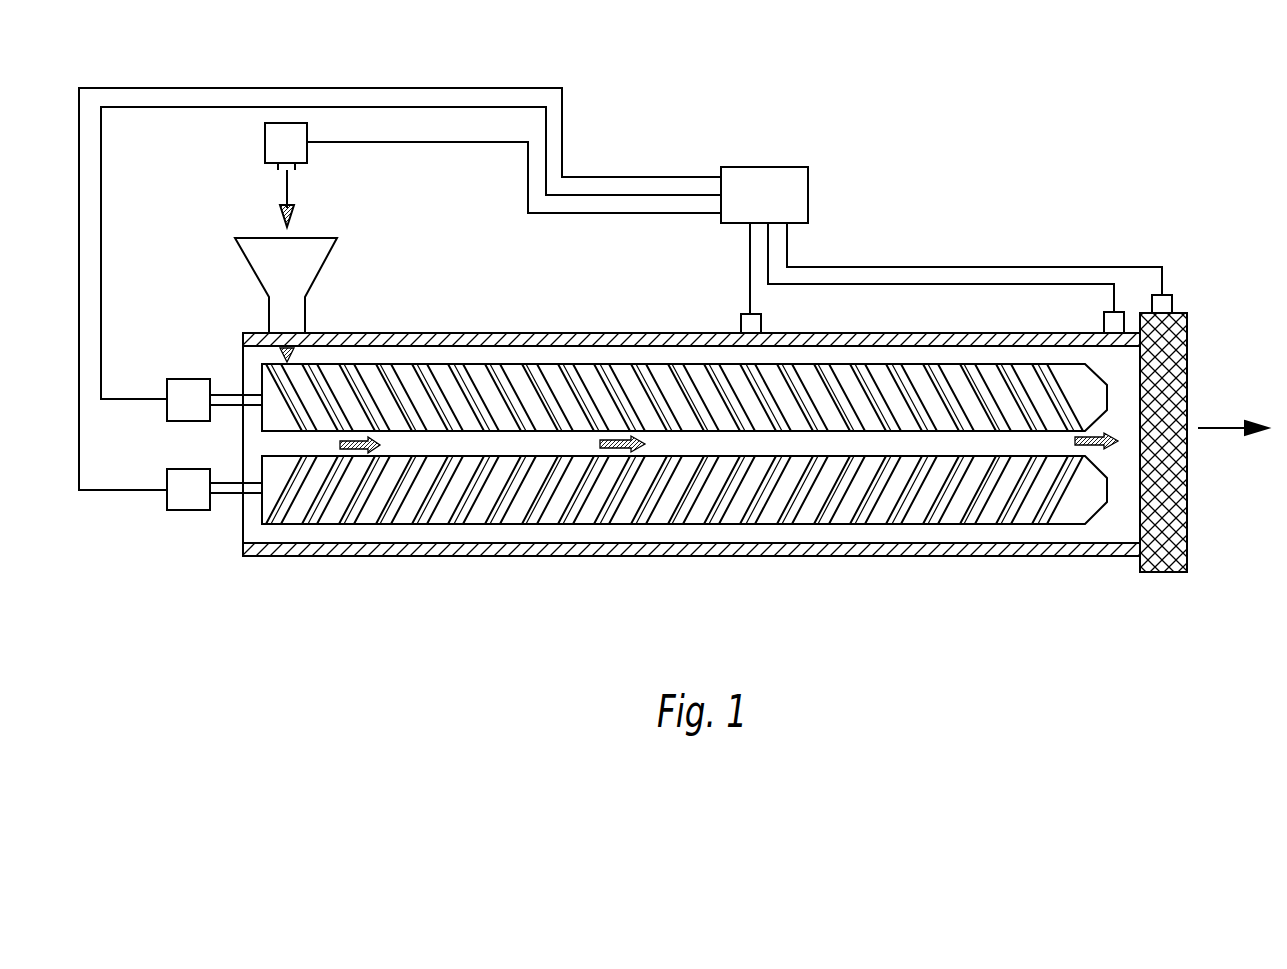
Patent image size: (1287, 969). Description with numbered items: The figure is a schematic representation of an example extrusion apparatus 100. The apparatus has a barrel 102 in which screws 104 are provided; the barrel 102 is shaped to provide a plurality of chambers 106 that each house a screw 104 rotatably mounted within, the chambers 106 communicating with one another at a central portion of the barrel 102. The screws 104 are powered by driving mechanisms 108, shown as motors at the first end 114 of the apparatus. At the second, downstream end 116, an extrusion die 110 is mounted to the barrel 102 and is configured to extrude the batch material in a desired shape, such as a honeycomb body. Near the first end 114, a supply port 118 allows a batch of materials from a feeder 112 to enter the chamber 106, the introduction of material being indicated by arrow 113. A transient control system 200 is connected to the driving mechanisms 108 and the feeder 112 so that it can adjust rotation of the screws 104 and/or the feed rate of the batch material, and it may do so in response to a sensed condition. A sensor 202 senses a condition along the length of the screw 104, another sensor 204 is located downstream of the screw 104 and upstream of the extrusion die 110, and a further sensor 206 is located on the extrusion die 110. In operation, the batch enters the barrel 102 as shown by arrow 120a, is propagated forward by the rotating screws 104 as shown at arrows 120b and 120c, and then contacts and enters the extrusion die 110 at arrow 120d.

The extrusion apparatus 100 is at (1005, 249).
The barrel 102 is at (598, 333).
The screws 104 is at (443, 378).
The chambers 106 is at (255, 364).
The driving mechanisms 108 is at (167, 388).
The extrusion die 110 is at (1187, 368).
The feeder 112 is at (307, 157).
The arrow 113 is at (285, 191).
The first end 114 is at (247, 582).
The second, downstream end 116 is at (1116, 578).
The supply port 118 is at (320, 270).
The arrow 120a is at (297, 356).
The arrow 120b is at (360, 456).
The arrow 120c is at (620, 453).
The arrow 120d is at (1105, 452).
The transient control system 200 is at (808, 173).
The sensor 202 is at (762, 320).
The sensor 204 is at (1104, 321).
The sensor 206 is at (1172, 300).